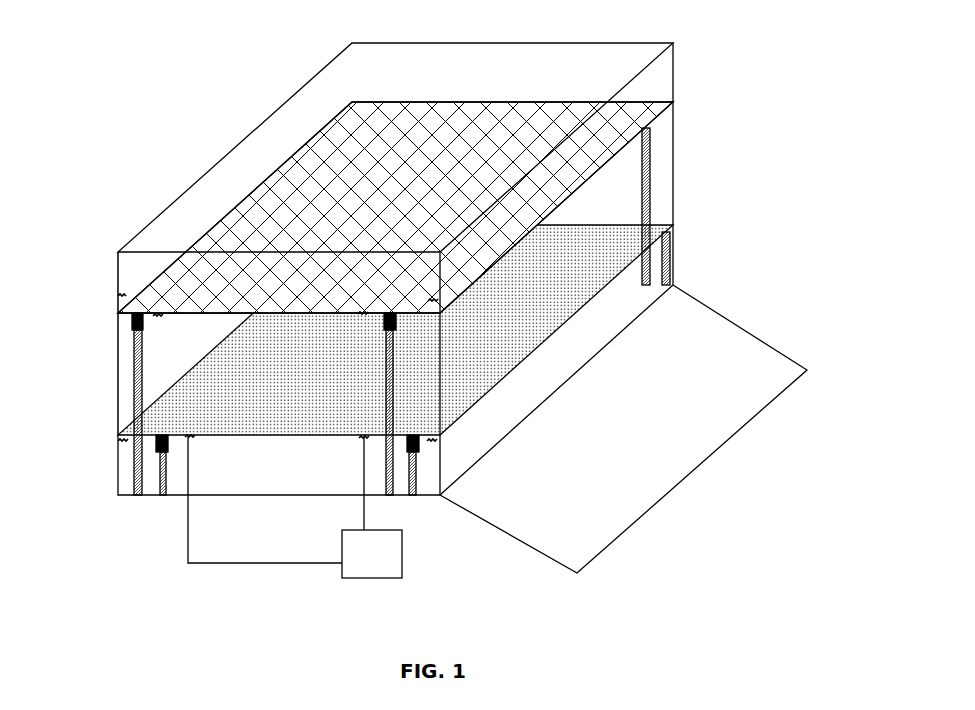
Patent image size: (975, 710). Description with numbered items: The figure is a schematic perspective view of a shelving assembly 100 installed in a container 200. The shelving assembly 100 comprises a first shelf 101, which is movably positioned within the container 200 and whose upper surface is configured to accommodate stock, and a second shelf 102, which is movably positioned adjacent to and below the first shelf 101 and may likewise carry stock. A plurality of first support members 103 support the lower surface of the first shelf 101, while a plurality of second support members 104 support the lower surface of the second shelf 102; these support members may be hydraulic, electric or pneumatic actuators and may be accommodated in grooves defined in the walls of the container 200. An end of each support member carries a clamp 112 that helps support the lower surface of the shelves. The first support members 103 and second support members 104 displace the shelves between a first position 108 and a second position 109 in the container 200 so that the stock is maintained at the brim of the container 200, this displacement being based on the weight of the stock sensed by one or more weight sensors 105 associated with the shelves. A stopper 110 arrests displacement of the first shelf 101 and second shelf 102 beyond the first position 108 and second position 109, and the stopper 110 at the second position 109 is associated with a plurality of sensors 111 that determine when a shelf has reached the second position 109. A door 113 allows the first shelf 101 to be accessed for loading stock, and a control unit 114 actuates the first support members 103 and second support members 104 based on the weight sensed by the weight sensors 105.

The shelving assembly 100 is at (195, 147).
The container 200 is at (578, 41).
The first shelf 101 is at (650, 127).
The second shelf 102 is at (603, 253).
The plurality of first support members 103 is at (386, 377).
The plurality of second support members 104 is at (168, 468).
The weight sensors 105 is at (357, 315).
The first position 108 is at (103, 445).
The second position 109 is at (103, 281).
The stopper 110 is at (120, 295).
The plurality of sensors 111 is at (210, 377).
The clamp 112 is at (157, 441).
The door 113 is at (748, 375).
The control unit 114 is at (295, 507).